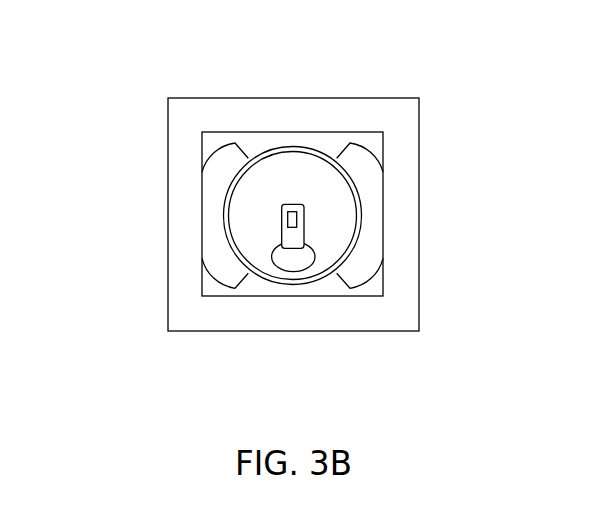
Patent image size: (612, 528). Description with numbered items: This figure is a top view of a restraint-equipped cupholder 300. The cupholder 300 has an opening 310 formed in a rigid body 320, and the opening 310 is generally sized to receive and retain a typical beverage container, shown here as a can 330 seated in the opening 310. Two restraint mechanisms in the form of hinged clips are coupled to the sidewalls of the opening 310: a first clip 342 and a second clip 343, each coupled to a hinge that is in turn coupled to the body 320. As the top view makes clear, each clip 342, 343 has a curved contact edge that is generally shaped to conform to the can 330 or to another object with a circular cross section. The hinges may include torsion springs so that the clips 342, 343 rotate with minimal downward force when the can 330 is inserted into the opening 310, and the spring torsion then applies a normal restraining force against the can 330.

The restraint-equipped cupholder 300 is at (101, 66).
The opening 310 is at (254, 137).
The rigid body 320 is at (403, 165).
The can 330 is at (288, 172).
The clip 342 is at (228, 155).
The clip 343 is at (353, 152).